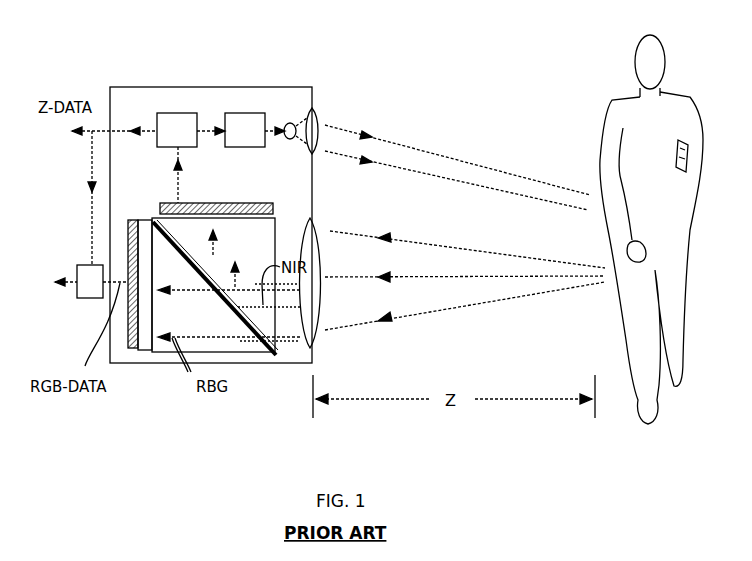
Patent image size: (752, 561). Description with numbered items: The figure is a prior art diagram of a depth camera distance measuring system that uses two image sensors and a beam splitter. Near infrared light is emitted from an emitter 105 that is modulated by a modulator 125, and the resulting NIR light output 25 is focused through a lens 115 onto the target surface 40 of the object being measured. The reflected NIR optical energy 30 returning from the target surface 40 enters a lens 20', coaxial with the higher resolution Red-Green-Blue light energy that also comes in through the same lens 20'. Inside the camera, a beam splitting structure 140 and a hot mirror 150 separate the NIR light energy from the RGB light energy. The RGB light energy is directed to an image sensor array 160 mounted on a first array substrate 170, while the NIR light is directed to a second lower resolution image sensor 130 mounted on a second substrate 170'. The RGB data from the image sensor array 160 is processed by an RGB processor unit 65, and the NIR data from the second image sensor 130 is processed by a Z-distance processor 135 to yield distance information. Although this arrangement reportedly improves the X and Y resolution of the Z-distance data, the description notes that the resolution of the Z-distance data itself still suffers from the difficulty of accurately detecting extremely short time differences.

The target surface 40 is at (592, 99).
The NIR light output 25 is at (437, 161).
The reflected NIR optical energy 30 is at (413, 243).
The lens 20' is at (331, 283).
The lens 115 is at (318, 116).
The emitter 105 is at (292, 122).
The Z-distance processor 135 is at (191, 158).
The modulator 125 is at (255, 130).
The second lower resolution image sensor 130 is at (275, 218).
The second substrate 170' is at (216, 196).
The first array substrate 170 is at (128, 255).
The image sensor array 160 is at (146, 220).
The hot mirror 150 is at (215, 287).
The beam splitting structure 140 is at (229, 285).
The RGB processor unit 65 is at (91, 281).